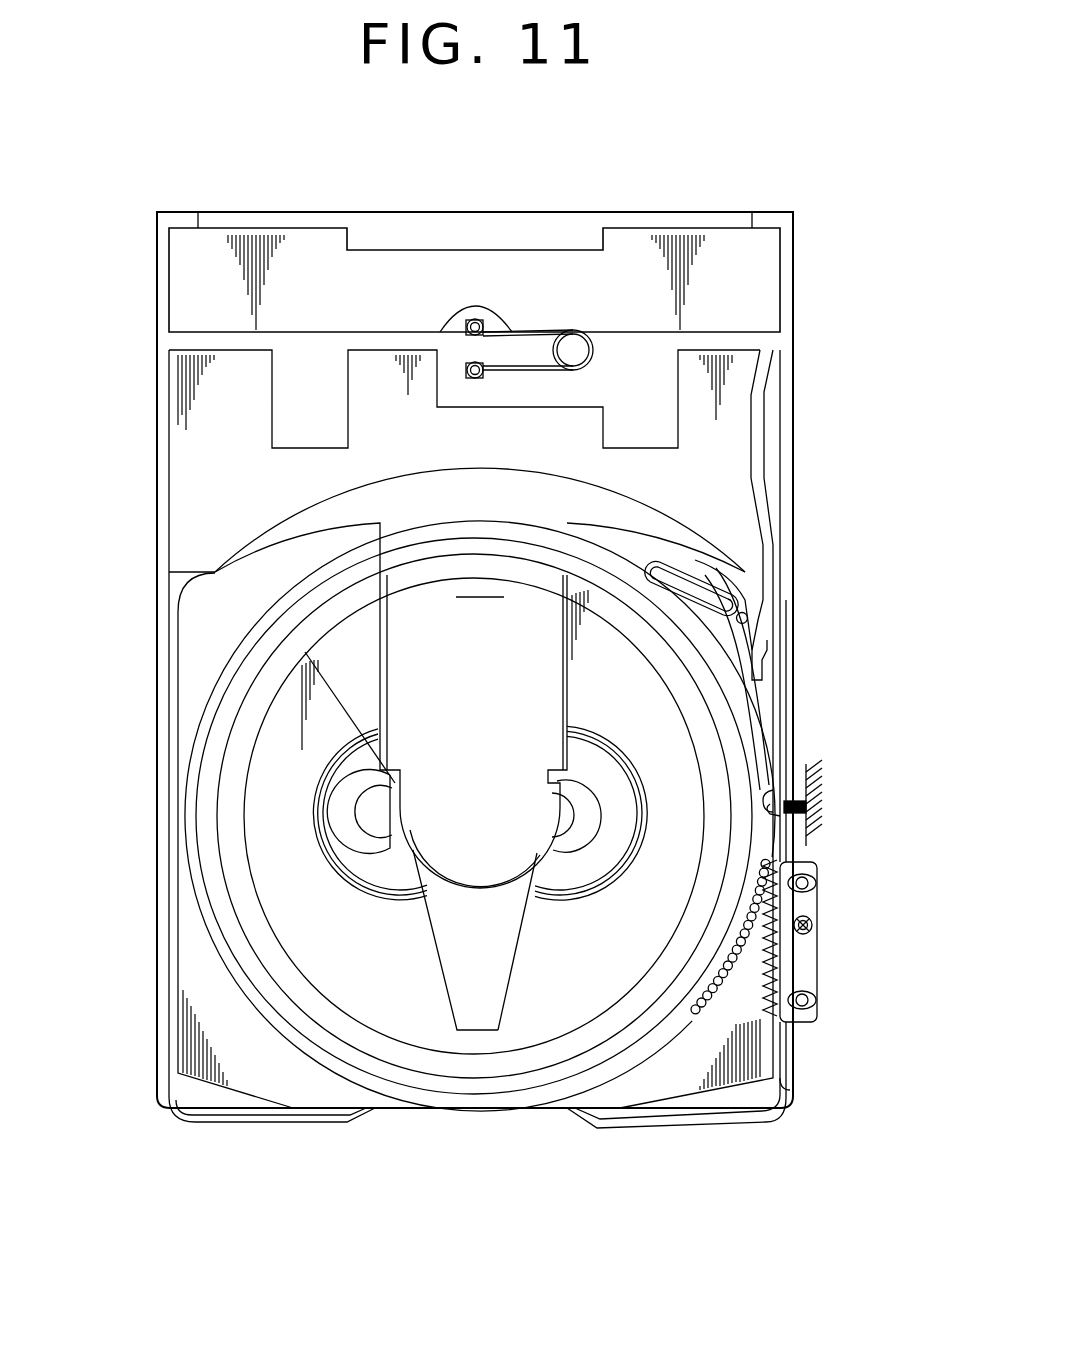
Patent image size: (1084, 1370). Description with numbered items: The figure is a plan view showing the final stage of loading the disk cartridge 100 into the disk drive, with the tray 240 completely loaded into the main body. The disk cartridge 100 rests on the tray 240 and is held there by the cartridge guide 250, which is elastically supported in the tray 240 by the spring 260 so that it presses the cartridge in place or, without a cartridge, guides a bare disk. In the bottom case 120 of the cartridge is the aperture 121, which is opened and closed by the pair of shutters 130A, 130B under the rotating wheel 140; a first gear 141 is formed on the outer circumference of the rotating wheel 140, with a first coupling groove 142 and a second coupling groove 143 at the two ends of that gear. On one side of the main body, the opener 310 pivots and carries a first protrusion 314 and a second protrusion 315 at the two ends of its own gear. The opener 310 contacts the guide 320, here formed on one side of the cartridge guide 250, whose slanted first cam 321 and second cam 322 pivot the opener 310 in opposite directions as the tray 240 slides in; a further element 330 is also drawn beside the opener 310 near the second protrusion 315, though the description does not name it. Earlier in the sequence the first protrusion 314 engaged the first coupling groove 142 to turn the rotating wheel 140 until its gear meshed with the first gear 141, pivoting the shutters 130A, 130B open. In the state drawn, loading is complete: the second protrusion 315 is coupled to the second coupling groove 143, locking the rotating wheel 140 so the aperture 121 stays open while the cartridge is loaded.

The disk cartridge 100 is at (199, 948).
The bottom case 120 is at (366, 638).
The aperture 121 is at (480, 584).
The shutter 130A is at (525, 1005).
The shutter 130B is at (430, 1005).
The rotating wheel 140 is at (730, 718).
The first gear 141 is at (712, 1000).
The first coupling groove 142 is at (646, 1043).
The second coupling groove 143 is at (765, 800).
The tray 240 is at (185, 278).
The cartridge guide 250 is at (190, 530).
The spring 260 is at (583, 332).
The opener 310 is at (834, 943).
The first protrusion 314 is at (775, 1090).
The second protrusion 315 is at (775, 808).
The guide 320 is at (746, 437).
The first cam 321 is at (766, 382).
The second cam 322 is at (776, 508).
The wall stop 330 is at (812, 792).